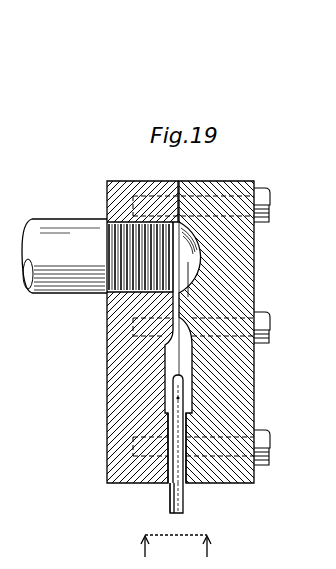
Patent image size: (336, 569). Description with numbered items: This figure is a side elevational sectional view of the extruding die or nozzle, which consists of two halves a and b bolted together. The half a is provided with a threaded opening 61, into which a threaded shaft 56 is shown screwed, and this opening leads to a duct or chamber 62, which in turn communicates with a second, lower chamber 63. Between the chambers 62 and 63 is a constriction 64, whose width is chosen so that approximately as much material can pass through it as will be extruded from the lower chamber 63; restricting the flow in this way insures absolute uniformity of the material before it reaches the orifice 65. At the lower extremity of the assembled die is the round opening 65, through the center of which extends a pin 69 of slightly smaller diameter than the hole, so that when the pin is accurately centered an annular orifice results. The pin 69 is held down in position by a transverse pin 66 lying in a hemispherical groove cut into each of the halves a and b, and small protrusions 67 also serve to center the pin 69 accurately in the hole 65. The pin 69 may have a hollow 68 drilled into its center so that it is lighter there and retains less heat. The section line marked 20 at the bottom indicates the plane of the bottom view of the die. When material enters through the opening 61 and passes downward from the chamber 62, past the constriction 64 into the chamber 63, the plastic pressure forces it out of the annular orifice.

The die half a is at (153, 182).
The die half b is at (213, 187).
The shaft 56 is at (73, 226).
The threaded opening 61 is at (106, 297).
The duct or chamber 62 is at (193, 258).
The second chamber 63 is at (186, 360).
The constriction 64 is at (180, 317).
The orifice 65 is at (168, 483).
The transverse pin 66 is at (180, 397).
The small protrusions 67 is at (187, 428).
The hollow 68 is at (178, 510).
The pin 69 is at (183, 498).
The section line 20- 20 is at (175, 546).